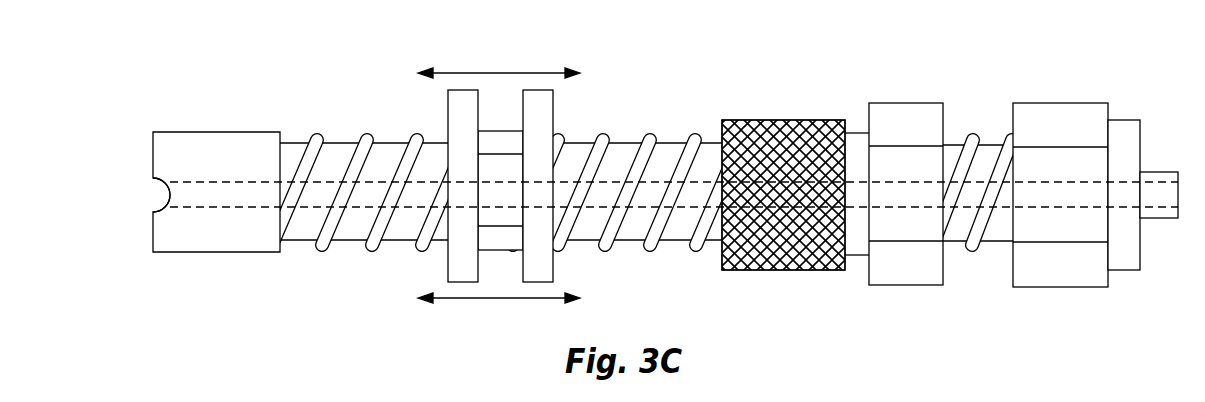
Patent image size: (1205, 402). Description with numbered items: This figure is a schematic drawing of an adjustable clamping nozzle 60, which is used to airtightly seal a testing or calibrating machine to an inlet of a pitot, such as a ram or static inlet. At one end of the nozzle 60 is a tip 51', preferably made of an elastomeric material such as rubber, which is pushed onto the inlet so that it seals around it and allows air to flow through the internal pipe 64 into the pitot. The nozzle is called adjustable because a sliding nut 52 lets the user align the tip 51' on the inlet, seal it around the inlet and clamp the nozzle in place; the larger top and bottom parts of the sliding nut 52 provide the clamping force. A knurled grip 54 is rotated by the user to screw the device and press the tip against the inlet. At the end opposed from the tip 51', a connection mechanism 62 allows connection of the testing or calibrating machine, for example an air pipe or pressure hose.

The tip 51' is at (669, 240).
The sliding nut 52 is at (495, 128).
The grip 54 is at (775, 120).
The adjustable clamping nozzle 60 is at (178, 110).
The connection mechanism 62 is at (1140, 130).
The internal pipe 64 is at (158, 194).